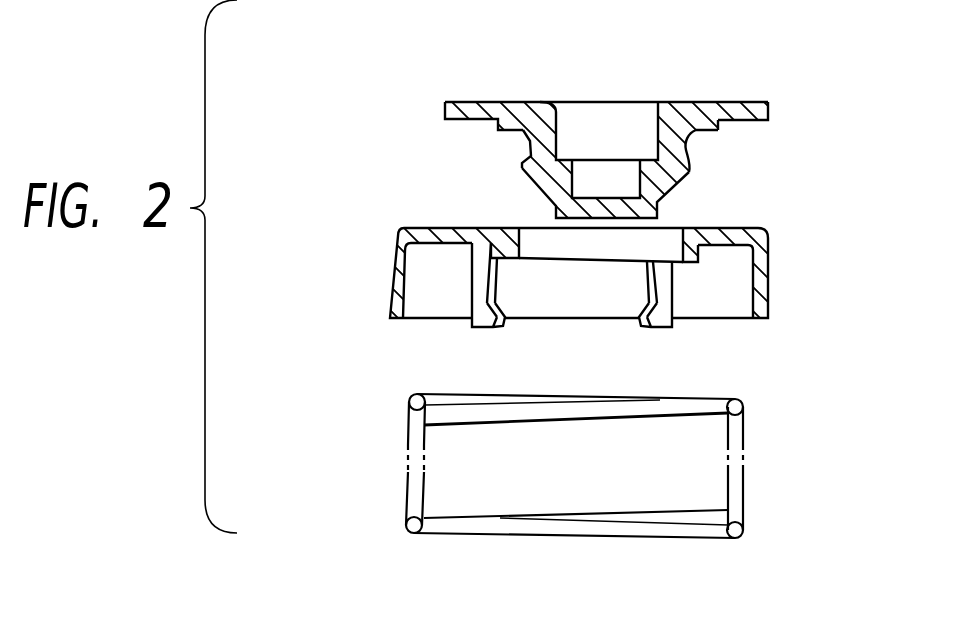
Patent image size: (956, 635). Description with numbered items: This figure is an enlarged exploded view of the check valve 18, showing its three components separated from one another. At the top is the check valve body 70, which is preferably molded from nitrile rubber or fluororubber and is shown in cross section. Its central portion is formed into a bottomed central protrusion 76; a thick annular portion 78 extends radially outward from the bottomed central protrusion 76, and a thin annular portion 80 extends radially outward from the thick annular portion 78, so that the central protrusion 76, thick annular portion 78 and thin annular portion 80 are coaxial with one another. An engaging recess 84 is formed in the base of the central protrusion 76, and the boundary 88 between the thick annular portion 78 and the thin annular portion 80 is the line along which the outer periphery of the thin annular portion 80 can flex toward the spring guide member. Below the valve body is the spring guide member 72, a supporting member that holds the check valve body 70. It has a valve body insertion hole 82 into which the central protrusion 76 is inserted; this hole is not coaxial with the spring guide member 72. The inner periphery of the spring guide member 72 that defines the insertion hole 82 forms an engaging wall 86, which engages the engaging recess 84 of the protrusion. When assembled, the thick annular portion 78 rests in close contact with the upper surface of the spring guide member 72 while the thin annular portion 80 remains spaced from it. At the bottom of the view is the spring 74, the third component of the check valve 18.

The check valve 18 is at (357, 300).
The check valve body 70 is at (480, 100).
The spring guide member 72 is at (768, 272).
The spring 74 is at (743, 487).
The bottomed central protrusion 76 is at (690, 168).
The thick annular portion 78 is at (695, 112).
The thin annular portion 80 is at (743, 102).
The valve body insertion hole 82 is at (660, 238).
The engaging recess 84 is at (522, 150).
The engaging wall 86 is at (523, 228).
The boundary 88 is at (723, 125).